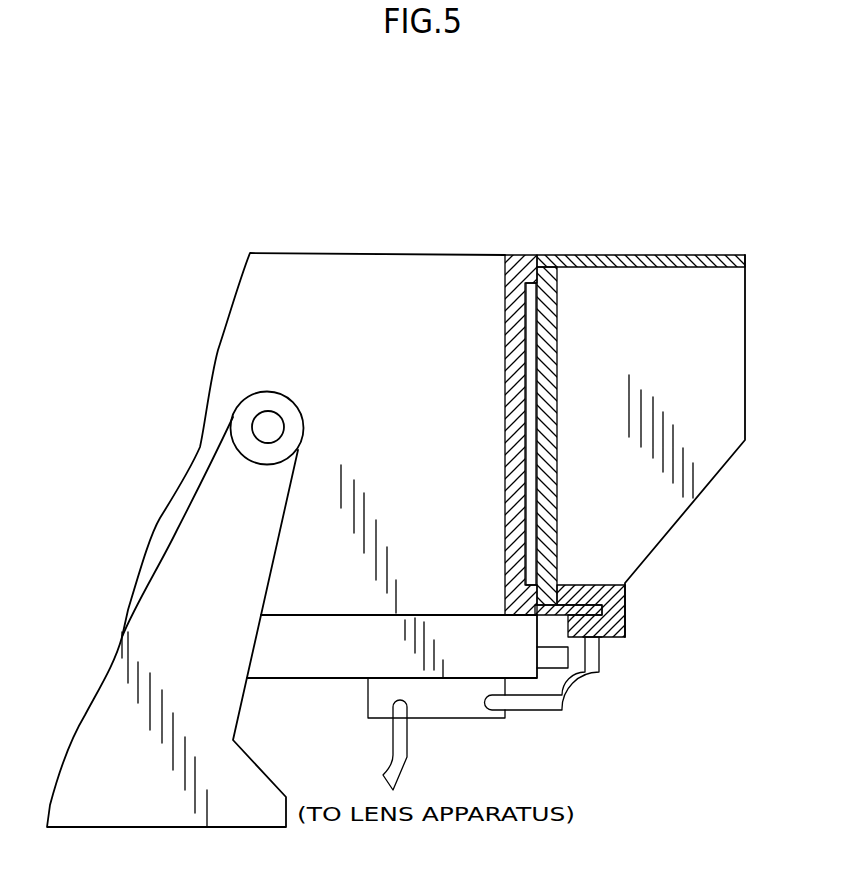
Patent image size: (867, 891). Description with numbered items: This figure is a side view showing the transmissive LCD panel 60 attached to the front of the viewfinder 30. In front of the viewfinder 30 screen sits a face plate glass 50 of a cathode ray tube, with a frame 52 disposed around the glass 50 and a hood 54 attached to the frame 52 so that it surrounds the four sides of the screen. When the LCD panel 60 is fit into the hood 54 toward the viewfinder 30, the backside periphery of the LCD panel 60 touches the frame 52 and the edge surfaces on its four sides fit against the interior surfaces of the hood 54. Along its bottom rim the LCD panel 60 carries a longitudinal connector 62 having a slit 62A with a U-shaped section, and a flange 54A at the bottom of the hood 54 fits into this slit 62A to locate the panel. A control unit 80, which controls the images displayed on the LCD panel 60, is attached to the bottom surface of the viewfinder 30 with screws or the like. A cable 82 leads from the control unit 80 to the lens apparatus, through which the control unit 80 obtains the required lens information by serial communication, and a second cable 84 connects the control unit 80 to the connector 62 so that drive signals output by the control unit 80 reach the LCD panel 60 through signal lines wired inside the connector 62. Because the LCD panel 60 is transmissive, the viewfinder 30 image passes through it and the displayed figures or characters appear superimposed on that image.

The viewfinder 30 is at (413, 242).
The face plate glass 50 is at (505, 343).
The frame 52 is at (527, 257).
The hood 54 is at (657, 257).
The flange 54A is at (568, 605).
The LCD panel 60 is at (553, 337).
The connector 62 is at (625, 622).
The slit 62A is at (595, 613).
The control unit 80 is at (483, 722).
The cable 82 is at (393, 757).
The cable 84 is at (558, 707).